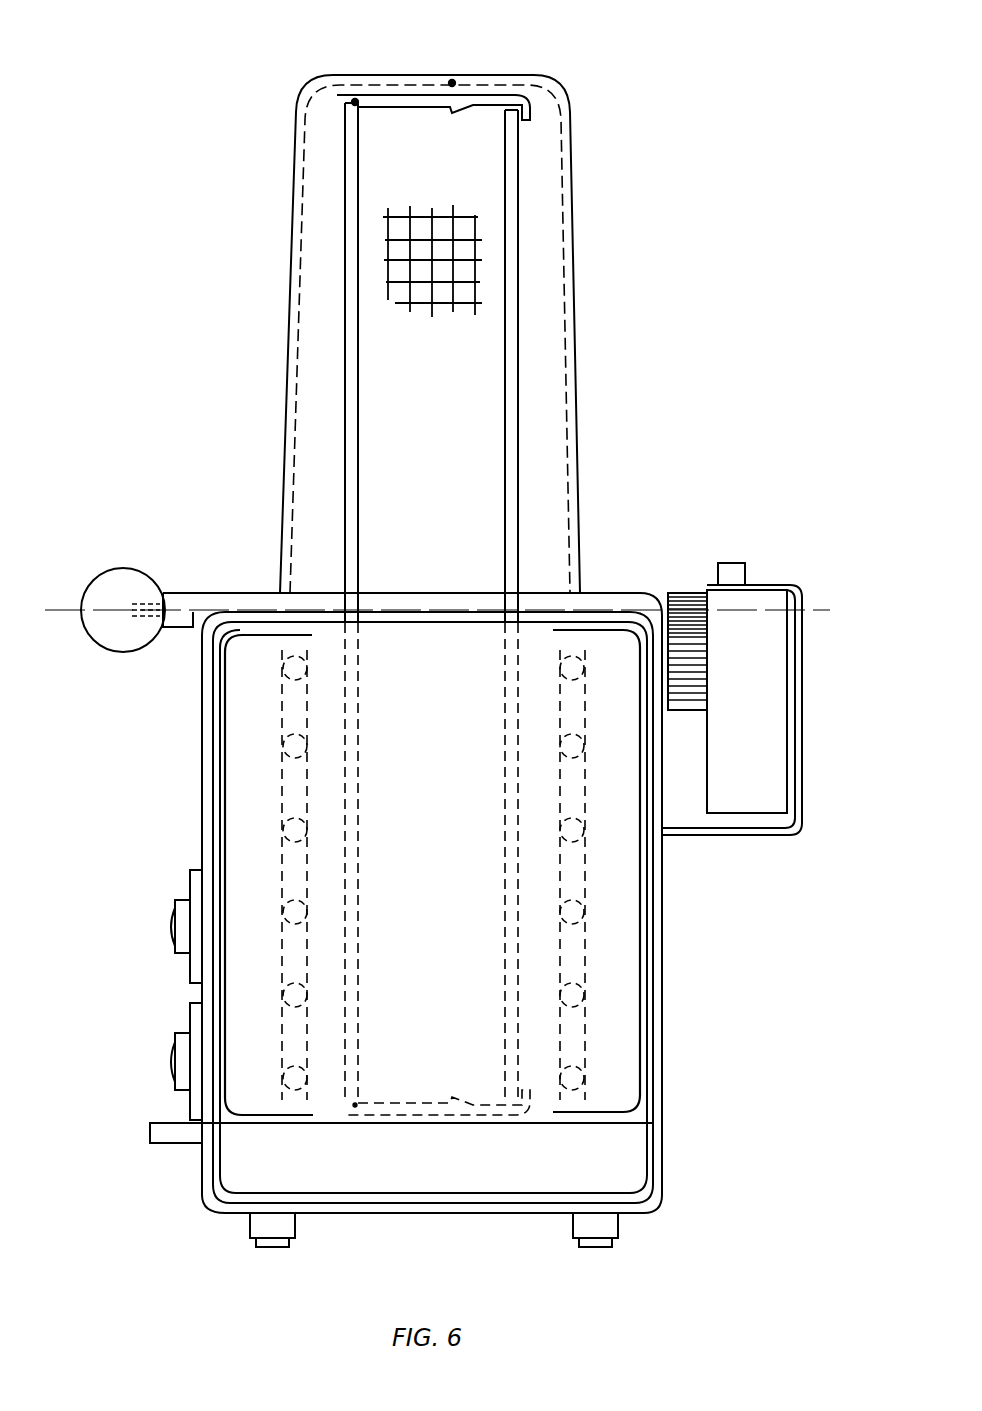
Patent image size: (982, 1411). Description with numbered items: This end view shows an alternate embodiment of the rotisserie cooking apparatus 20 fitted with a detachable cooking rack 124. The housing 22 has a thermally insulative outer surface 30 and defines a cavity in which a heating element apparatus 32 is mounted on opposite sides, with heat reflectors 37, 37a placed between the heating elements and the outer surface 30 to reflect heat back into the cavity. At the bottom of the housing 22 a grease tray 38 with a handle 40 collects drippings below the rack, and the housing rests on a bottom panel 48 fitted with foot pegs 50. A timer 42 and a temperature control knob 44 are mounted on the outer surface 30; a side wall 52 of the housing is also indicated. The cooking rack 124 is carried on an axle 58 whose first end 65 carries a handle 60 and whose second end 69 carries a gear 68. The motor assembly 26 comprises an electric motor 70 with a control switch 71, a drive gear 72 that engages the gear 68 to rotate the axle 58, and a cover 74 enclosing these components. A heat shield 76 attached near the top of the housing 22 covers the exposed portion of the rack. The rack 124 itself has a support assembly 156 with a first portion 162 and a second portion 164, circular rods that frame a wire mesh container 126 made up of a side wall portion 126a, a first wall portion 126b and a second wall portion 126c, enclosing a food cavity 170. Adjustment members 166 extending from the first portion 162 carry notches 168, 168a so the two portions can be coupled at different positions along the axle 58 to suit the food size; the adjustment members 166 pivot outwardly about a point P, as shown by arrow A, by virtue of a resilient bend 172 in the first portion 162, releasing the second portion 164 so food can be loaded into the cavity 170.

The rotisserie cooking apparatus 20 is at (748, 343).
The housing 22 is at (409, 923).
The motor assembly 26 is at (747, 668).
The outer surface 30 is at (207, 848).
The heating element apparatus 32 is at (275, 1080).
The heat reflector 37 is at (642, 953).
The heat reflector 37a is at (226, 735).
The grease tray 38 is at (212, 1175).
The handle 40 is at (160, 1138).
The timer 42 is at (178, 1047).
The temperature control knob 44 is at (188, 883).
The bottom panel 48 is at (648, 1206).
The foot pegs 50 is at (290, 1232).
The side wall 52 is at (662, 1012).
The axle 58 is at (203, 593).
The handle 60 is at (84, 590).
The first end 65 is at (193, 628).
The gear 68 is at (684, 592).
The second end 69 is at (651, 606).
The electric motor 70 is at (775, 790).
The control switch 71 is at (728, 563).
The drive gear 72 is at (687, 715).
The cover 74 is at (800, 755).
The heat shield 76 is at (299, 192).
The detachable cooking rack 124 is at (308, 522).
The wire mesh container 126 is at (434, 604).
The side wall portion 126a is at (380, 382).
The first wall portion 126b is at (345, 398).
The second wall portion 126c is at (523, 385).
The support assembly 156 is at (357, 258).
The first portion 162 is at (350, 158).
The second portion 164 is at (512, 187).
The adjustment members 166 is at (492, 100).
The notch 168 is at (455, 112).
The notch 168a is at (532, 100).
The cavity 170 is at (453, 522).
The resilient bend 172 is at (356, 100).
The arrow A is at (452, 83).
The point P is at (345, 104).